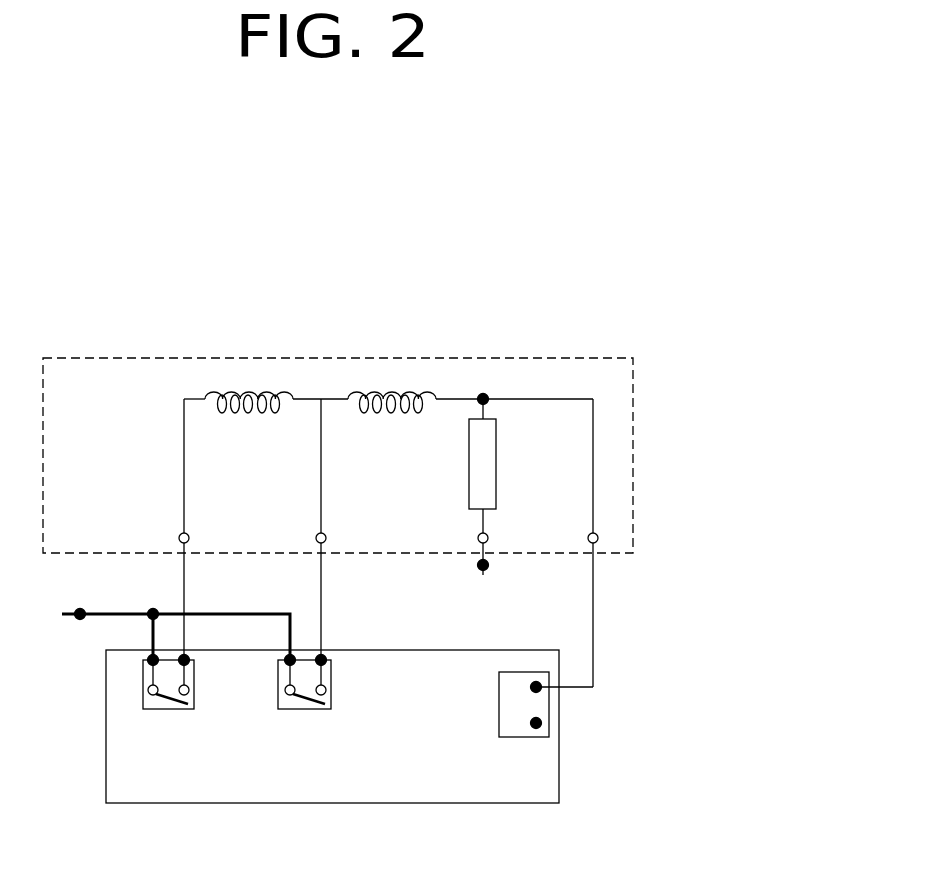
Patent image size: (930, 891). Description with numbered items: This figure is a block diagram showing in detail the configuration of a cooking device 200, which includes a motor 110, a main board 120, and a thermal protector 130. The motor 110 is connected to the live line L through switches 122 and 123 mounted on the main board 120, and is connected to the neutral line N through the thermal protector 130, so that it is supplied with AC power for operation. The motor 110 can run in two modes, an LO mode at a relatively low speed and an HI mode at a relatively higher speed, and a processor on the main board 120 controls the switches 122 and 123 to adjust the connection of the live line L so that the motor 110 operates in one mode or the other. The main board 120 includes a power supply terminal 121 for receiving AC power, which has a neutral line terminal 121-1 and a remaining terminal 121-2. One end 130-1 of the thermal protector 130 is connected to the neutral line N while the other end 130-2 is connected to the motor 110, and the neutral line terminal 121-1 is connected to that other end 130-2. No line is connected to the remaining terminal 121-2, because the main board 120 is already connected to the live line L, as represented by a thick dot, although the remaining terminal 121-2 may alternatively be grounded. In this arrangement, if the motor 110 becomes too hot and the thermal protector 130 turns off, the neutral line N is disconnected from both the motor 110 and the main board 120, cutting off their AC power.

The cooking device 200 is at (347, 238).
The motor 110 is at (596, 358).
The main board 120 is at (525, 803).
The power supply terminal 121 is at (549, 705).
The neutral line terminal 121-1 is at (540, 683).
The remaining terminal 121-2 is at (540, 728).
The switch 122 is at (168, 710).
The switch 123 is at (305, 710).
The thermal protector 130 is at (496, 445).
The one end of the thermal protector 130-1 is at (489, 538).
The other end of the thermal protector 130-2 is at (483, 394).